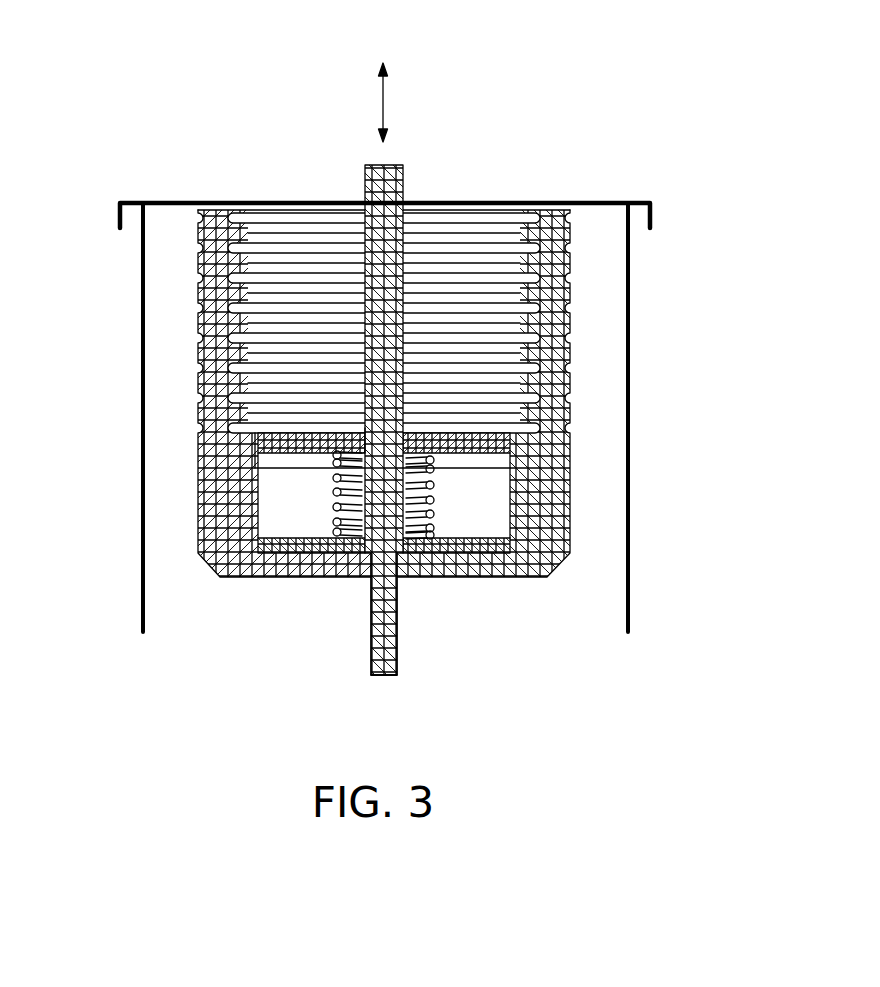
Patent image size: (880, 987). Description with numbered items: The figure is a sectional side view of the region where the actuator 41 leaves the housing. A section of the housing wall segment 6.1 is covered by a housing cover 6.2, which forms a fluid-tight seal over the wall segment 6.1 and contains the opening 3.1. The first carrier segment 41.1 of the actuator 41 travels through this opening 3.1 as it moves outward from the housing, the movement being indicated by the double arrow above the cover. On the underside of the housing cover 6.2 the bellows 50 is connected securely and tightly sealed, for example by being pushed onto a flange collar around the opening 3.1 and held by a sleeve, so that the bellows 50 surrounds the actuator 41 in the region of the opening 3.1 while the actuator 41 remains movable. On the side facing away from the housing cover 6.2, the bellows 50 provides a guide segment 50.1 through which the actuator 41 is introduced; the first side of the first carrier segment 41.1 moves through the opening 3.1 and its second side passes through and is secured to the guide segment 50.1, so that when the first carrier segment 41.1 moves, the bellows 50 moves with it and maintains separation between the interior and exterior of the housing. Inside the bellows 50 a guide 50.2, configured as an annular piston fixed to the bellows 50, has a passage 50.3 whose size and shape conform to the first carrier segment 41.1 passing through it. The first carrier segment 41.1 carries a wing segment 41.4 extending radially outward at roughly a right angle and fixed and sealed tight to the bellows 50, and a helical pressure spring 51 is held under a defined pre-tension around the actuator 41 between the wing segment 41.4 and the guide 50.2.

The actuator 41 is at (103, 126).
The opening 3.1 is at (355, 187).
The wall segment 6.1 is at (630, 386).
The housing cover 6.2 is at (475, 203).
The bellows 50 is at (605, 288).
The guide segment 50.1 is at (411, 590).
The guide 50.2 is at (267, 447).
The passage 50.3 is at (349, 431).
The helical pressure spring 51 is at (311, 494).
The first carrier segment 41.1 is at (383, 672).
The wing segment 41.4 is at (253, 543).